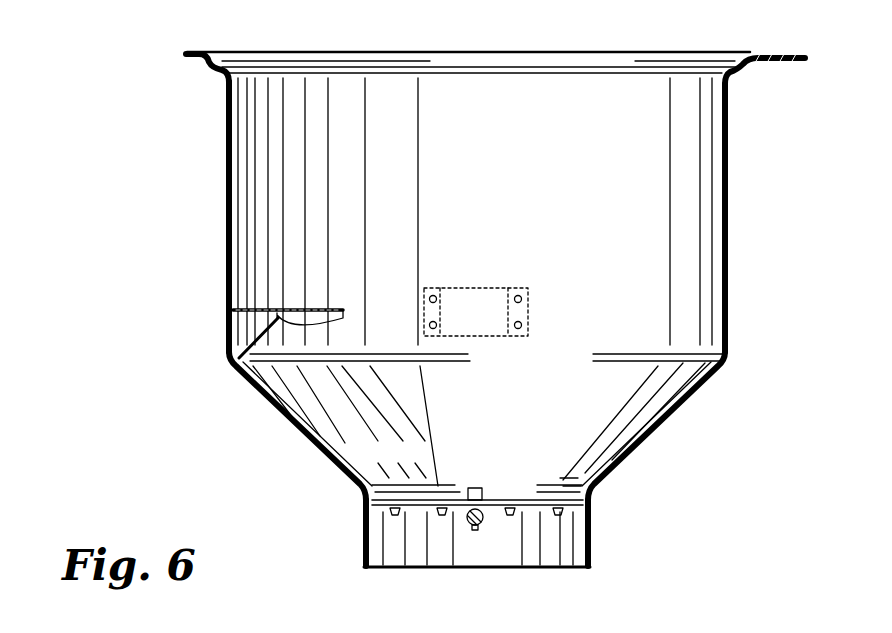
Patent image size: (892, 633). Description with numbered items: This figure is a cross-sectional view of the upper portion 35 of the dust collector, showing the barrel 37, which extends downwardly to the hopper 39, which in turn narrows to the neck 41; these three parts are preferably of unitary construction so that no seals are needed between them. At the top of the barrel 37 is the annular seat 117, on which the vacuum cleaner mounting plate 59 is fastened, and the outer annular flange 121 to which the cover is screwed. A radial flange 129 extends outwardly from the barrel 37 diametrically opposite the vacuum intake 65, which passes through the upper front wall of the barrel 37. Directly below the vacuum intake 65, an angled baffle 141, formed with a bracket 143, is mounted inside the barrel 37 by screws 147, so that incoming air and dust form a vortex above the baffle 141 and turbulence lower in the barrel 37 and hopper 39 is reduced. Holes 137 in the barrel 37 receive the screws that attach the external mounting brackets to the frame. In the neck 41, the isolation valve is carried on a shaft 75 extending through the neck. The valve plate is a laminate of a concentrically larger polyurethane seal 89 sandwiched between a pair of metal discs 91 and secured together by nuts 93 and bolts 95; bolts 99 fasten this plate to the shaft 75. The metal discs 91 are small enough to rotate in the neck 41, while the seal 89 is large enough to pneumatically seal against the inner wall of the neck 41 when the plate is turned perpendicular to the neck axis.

The upper portion 35 is at (182, 254).
The barrel 37 is at (226, 205).
The hopper 39 is at (303, 433).
The neck 41 is at (365, 548).
The plate 59 is at (602, 52).
The vacuum intake 65 is at (228, 108).
The shaft 75 is at (470, 524).
The polyurethane seal 89 is at (578, 490).
The metal discs 91 is at (478, 486).
The nuts 93 is at (563, 516).
The bolts 95 is at (392, 516).
The bolts 99 is at (468, 488).
The annular seat 117 is at (217, 59).
The outer annular flange 121 is at (189, 51).
The flange 129 is at (776, 50).
The holes 137 is at (517, 323).
The baffle 141 is at (306, 306).
The bracket 143 is at (246, 341).
The screws 147 is at (228, 344).